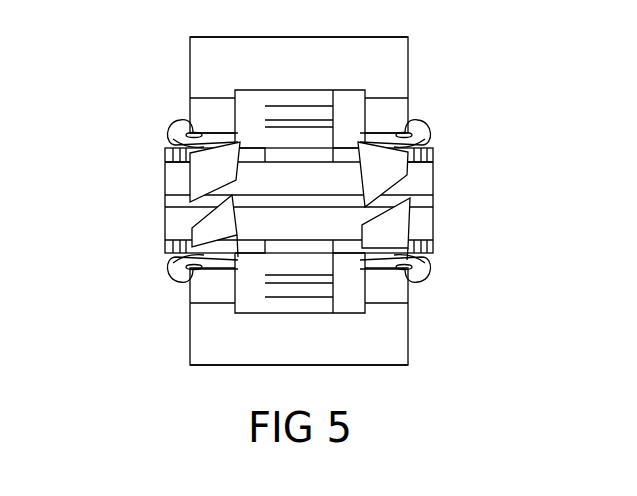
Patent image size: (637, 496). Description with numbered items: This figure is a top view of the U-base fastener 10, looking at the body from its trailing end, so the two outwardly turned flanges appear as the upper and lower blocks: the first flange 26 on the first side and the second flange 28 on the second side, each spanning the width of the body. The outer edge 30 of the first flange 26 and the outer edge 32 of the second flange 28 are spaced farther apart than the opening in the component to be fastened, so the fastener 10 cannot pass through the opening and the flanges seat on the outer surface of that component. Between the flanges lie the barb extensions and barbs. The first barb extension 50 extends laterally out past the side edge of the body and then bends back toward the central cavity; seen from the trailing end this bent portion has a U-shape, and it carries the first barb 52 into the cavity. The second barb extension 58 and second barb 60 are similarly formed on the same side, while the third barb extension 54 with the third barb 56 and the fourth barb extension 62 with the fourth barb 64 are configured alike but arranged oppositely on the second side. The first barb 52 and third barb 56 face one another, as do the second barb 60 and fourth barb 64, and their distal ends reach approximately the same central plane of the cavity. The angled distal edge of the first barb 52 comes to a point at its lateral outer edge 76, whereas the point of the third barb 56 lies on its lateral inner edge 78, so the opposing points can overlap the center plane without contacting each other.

The fastener 10 is at (118, 84).
The first flange 26 is at (383, 336).
The second flange 28 is at (328, 55).
The outer edge of the first flange 30 is at (210, 365).
The outer edge of the second flange 32 is at (260, 37).
The first barb extension 50 is at (425, 268).
The first barb 52 is at (387, 228).
The third barb extension 54 is at (422, 135).
The third barb 56 is at (380, 173).
The second barb extension 58 is at (190, 256).
The second barb 60 is at (196, 218).
The fourth barb extension 62 is at (170, 130).
The fourth barb 64 is at (200, 176).
The lateral outer edge of the first barb 76 is at (188, 185).
The lateral inner edge of the third barb 78 is at (172, 252).